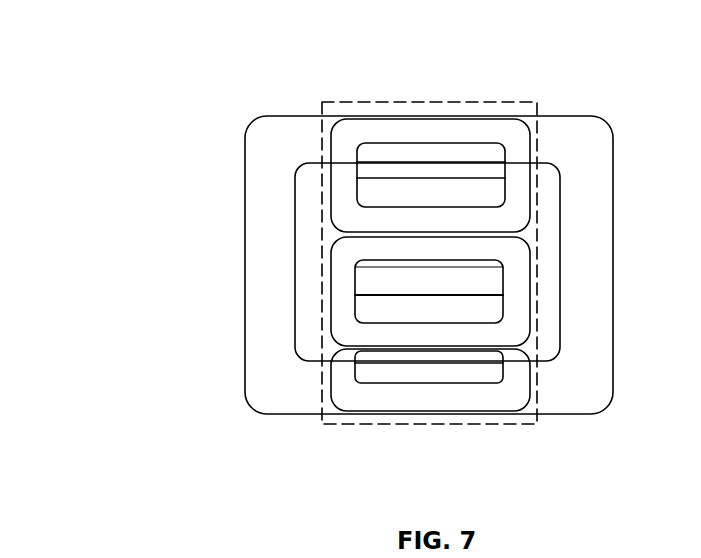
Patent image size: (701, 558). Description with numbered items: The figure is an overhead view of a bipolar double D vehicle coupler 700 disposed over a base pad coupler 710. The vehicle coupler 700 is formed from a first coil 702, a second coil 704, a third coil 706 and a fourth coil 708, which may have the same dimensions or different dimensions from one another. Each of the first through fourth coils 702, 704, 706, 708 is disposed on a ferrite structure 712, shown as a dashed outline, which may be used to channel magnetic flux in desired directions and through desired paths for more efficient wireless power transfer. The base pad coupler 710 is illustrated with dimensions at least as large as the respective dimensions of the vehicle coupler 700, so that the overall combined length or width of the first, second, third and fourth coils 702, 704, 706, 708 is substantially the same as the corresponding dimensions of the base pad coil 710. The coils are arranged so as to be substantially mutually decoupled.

The bipolar double D vehicle coupler 700 is at (123, 59).
The first coil 702 is at (366, 128).
The second coil 704 is at (345, 300).
The third coil 706 is at (488, 283).
The fourth coil 708 is at (515, 405).
The base pad coupler 710 is at (265, 146).
The ferrite structure 712 is at (507, 102).